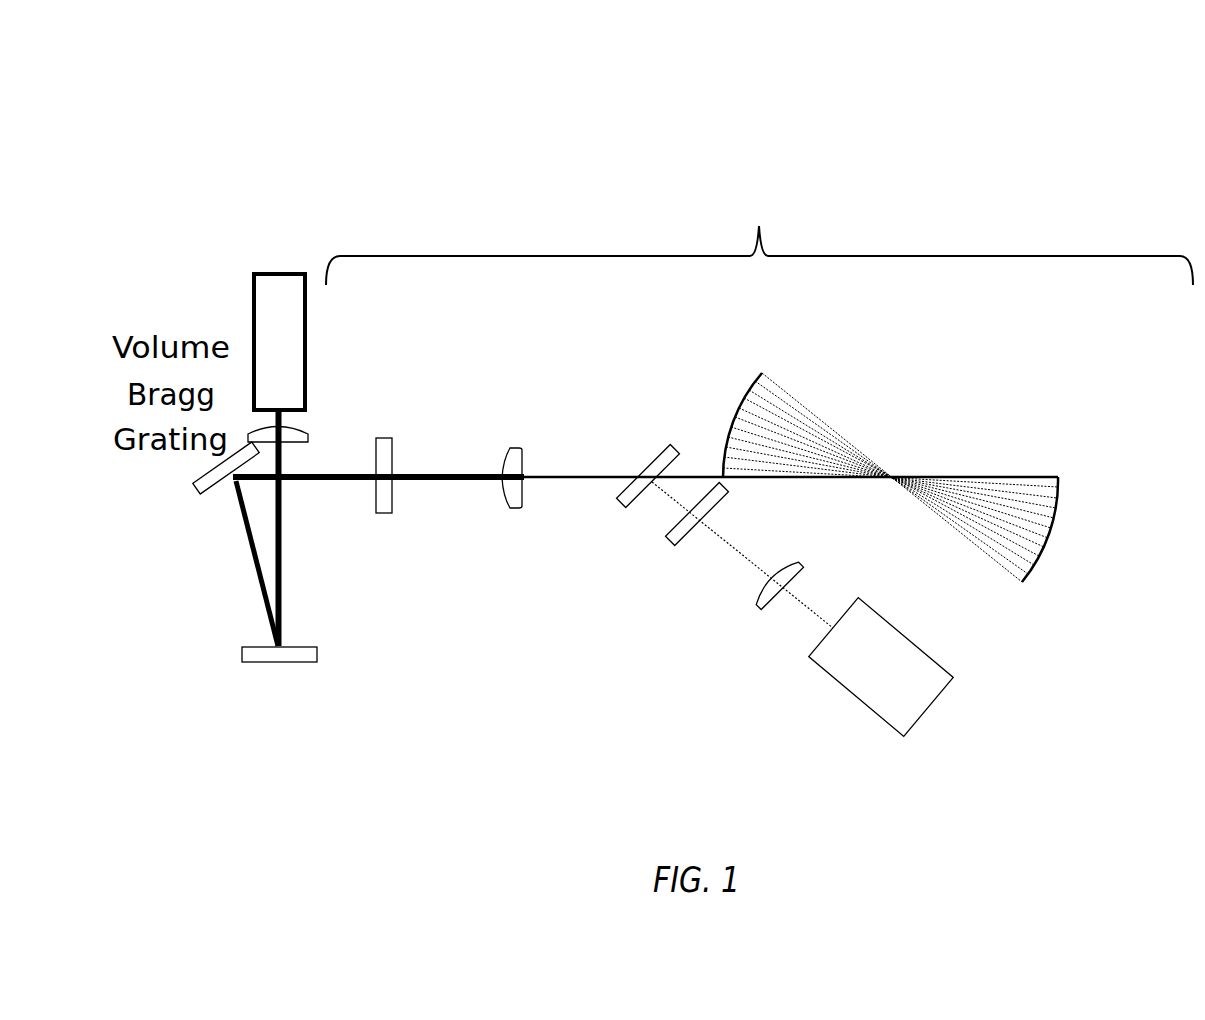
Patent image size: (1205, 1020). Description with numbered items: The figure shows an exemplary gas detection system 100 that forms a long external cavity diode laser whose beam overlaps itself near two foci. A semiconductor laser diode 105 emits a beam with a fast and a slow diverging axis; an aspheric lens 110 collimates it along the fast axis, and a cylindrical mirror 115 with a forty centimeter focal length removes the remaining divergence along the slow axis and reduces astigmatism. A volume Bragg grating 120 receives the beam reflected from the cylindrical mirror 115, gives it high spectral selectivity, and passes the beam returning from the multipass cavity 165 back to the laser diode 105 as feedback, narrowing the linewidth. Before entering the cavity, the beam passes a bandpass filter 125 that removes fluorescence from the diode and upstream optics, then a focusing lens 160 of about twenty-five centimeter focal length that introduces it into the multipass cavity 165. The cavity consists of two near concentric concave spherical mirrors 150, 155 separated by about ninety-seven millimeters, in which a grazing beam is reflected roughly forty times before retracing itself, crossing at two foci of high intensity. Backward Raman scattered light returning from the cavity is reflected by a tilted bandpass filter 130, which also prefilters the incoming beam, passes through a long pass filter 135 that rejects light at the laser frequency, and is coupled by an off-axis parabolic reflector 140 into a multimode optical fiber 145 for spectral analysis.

The gas detection system 100 is at (282, 97).
The semiconductor laser diode 105 is at (277, 272).
The aspheric lens 110 is at (300, 444).
The cylindrical mirror 115 is at (318, 656).
The volume Bragg grating 120 is at (203, 492).
The bandpass filter 125 is at (394, 473).
The tilted bandpass filter 130 is at (624, 502).
The long pass filter 135 is at (725, 505).
The off-axis parabolic reflector 140 is at (768, 608).
The multimode optical fiber 145 is at (836, 680).
The concave mirror 150 is at (743, 392).
The concave mirror 155 is at (1062, 508).
The focusing lens 160 is at (518, 447).
The multipass cavity 165 is at (895, 256).